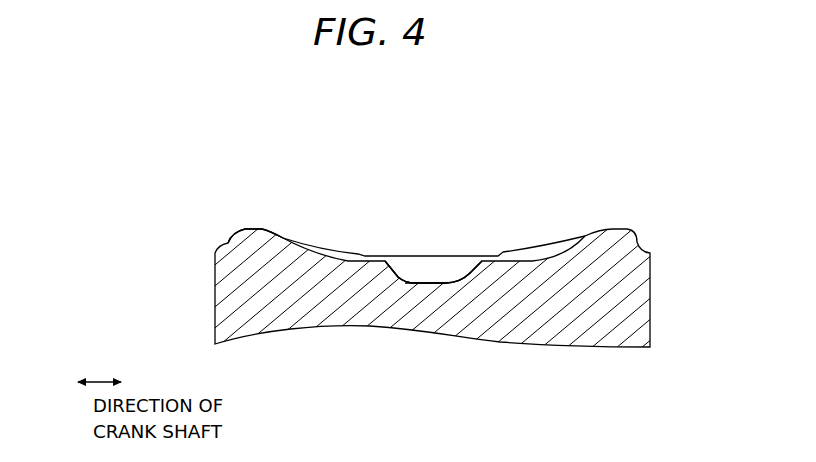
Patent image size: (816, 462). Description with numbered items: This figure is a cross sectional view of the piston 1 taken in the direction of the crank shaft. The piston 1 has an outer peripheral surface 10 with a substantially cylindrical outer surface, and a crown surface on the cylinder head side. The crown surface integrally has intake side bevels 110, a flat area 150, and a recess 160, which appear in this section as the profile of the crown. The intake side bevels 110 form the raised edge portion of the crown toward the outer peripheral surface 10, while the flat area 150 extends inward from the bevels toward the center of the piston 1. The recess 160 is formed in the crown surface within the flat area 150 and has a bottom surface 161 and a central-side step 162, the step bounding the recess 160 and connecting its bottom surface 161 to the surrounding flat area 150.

The piston 1 is at (222, 197).
The outer peripheral surface 10 is at (215, 272).
The intake side bevels 110 is at (252, 229).
The flat area 150 is at (348, 261).
The recess 160 is at (433, 267).
The bottom surface 161 is at (442, 282).
The central-side step 162 is at (470, 273).